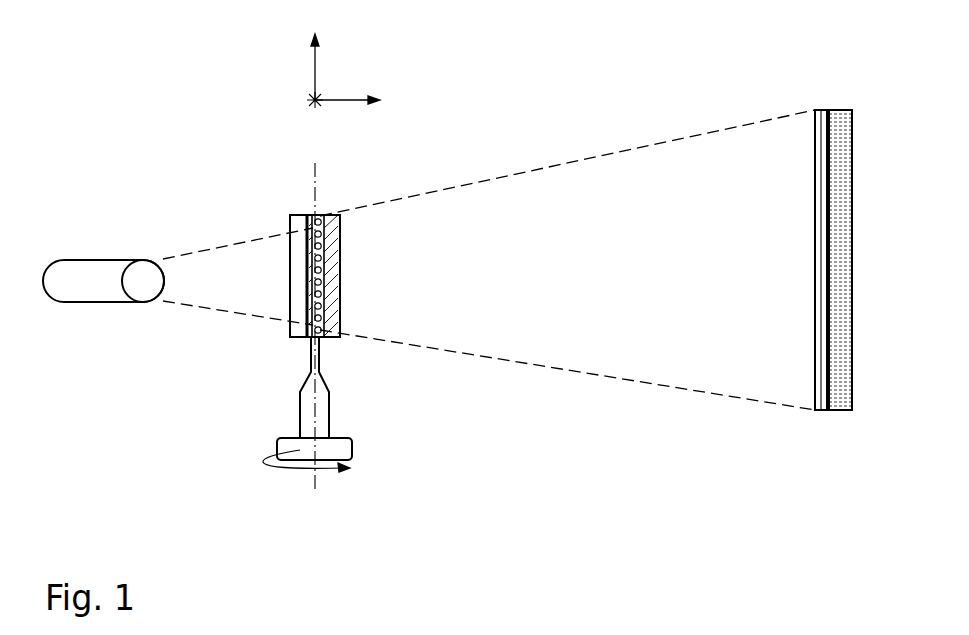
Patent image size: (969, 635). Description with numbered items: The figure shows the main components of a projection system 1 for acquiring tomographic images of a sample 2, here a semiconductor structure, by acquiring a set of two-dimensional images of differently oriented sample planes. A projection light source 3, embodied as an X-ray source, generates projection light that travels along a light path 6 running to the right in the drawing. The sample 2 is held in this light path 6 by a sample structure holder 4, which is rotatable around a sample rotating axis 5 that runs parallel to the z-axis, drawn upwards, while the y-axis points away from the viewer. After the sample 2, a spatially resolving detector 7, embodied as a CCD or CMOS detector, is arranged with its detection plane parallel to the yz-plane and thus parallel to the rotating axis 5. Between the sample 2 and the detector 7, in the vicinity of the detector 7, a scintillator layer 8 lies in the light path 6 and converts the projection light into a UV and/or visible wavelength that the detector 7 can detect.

The projection system 1 is at (497, 90).
The sample 2 is at (333, 338).
The projection light source 3 is at (93, 290).
The sample structure holder 4 is at (296, 453).
The sample rotating axis 5 is at (318, 397).
The light path 6 is at (605, 377).
The spatially resolving detector 7 is at (843, 412).
The scintillator layer 8 is at (822, 412).